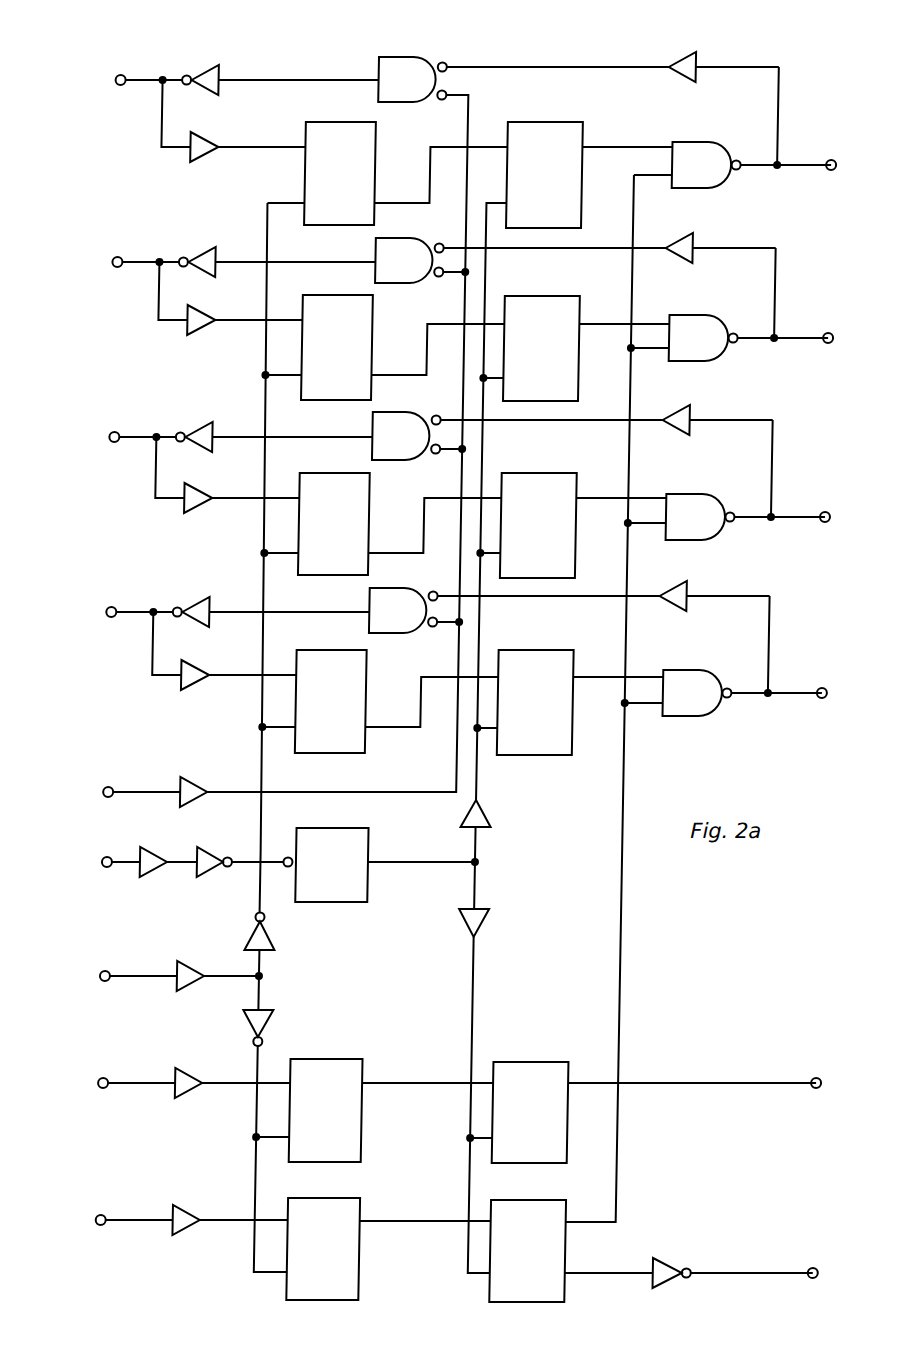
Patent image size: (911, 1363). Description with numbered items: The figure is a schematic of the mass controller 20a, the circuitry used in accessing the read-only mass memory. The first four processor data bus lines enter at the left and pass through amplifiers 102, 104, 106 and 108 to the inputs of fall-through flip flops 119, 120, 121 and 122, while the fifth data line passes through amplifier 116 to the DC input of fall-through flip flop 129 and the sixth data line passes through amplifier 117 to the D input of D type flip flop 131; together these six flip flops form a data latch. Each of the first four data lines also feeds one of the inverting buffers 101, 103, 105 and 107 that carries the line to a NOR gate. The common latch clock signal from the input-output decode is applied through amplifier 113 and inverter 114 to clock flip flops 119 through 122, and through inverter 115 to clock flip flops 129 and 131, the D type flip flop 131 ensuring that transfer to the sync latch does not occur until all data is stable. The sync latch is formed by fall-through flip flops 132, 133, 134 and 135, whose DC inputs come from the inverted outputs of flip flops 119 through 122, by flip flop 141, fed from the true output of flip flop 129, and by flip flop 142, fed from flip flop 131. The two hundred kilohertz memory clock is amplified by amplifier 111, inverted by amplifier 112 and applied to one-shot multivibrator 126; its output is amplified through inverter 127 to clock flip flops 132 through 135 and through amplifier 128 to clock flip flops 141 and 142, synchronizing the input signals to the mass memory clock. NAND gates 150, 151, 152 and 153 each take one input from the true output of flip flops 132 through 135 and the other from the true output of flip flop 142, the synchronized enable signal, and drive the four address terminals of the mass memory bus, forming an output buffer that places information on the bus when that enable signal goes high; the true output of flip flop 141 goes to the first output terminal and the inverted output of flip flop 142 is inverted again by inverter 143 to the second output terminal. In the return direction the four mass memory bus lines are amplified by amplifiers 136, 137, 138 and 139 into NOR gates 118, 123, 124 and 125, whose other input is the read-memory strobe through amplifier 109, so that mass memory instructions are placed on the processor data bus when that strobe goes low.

The mass controller 20a is at (368, 47).
The inverter 101 is at (204, 64).
The amplifier 102 is at (199, 150).
The inverter 103 is at (205, 247).
The amplifier 104 is at (196, 326).
The inverter 105 is at (207, 425).
The amplifier 106 is at (198, 503).
The inverter 107 is at (208, 606).
The amplifier 108 is at (203, 681).
The amplifier 109 is at (207, 783).
The amplifier 111 is at (175, 848).
The amplifier 112 is at (250, 832).
The amplifier 113 is at (221, 970).
The inverter 114 is at (262, 940).
The inverter 115 is at (266, 1025).
The amplifier 116 is at (207, 1098).
The amplifier 117 is at (207, 1236).
The NOR gate 118 is at (420, 57).
The fall-through flip flop 119 is at (306, 128).
The fall-through flip flop 120 is at (342, 295).
The fall-through flip flop 121 is at (345, 473).
The fall-through flip flop 122 is at (348, 650).
The NOR gate 123 is at (397, 238).
The NOR gate 124 is at (397, 412).
The NOR gate 125 is at (396, 588).
The one-shot multivibrator 126 is at (346, 828).
The inverter 127 is at (498, 810).
The amplifier 128 is at (498, 920).
The fall-through flip flop 129 is at (356, 1059).
The D type flip flop 131 is at (343, 1198).
The fall-through flip flop 132 is at (545, 122).
The fall-through flip flop 133 is at (540, 296).
The fall-through flip flop 134 is at (541, 473).
The fall-through flip flop 135 is at (533, 650).
The amplifier 136 is at (726, 72).
The amplifier 137 is at (684, 265).
The amplifier 138 is at (686, 437).
The amplifier 139 is at (694, 612).
The fall-through flip flop 141 is at (544, 1062).
The flip flop 142 is at (541, 1200).
The inverter 143 is at (692, 1266).
The NAND gate 150 is at (718, 178).
The NAND gate 151 is at (700, 352).
The NAND gate 152 is at (714, 530).
The NAND gate 153 is at (689, 716).